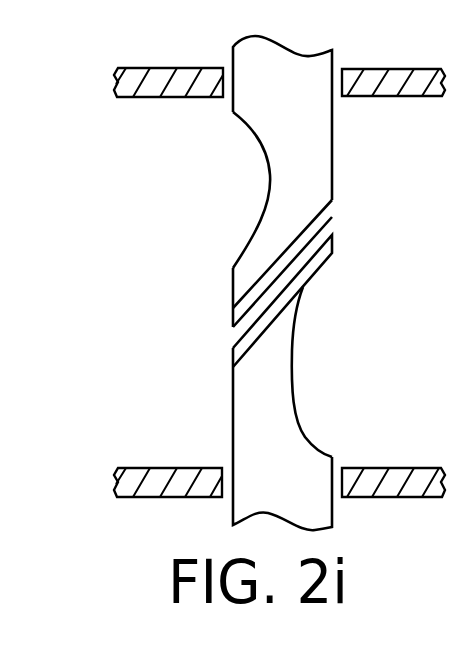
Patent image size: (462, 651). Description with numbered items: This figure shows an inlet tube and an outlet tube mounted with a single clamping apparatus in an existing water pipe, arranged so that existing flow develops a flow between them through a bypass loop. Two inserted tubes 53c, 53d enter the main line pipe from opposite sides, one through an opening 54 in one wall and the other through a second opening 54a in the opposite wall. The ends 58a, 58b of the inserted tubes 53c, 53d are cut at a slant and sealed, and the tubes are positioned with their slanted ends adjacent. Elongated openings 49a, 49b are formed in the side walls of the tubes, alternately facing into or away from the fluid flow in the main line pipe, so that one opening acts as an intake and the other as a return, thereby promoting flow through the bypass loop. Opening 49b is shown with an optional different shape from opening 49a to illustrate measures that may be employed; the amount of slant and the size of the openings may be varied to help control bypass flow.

The opening 54 is at (336, 64).
The second opening 54a is at (336, 472).
The inserted tube 53c is at (333, 156).
The inserted tube 53d is at (232, 400).
The end of inserted tube 58a is at (334, 207).
The end of inserted tube 58b is at (335, 246).
The elongated opening 49a is at (263, 158).
The elongated opening 49b is at (298, 338).